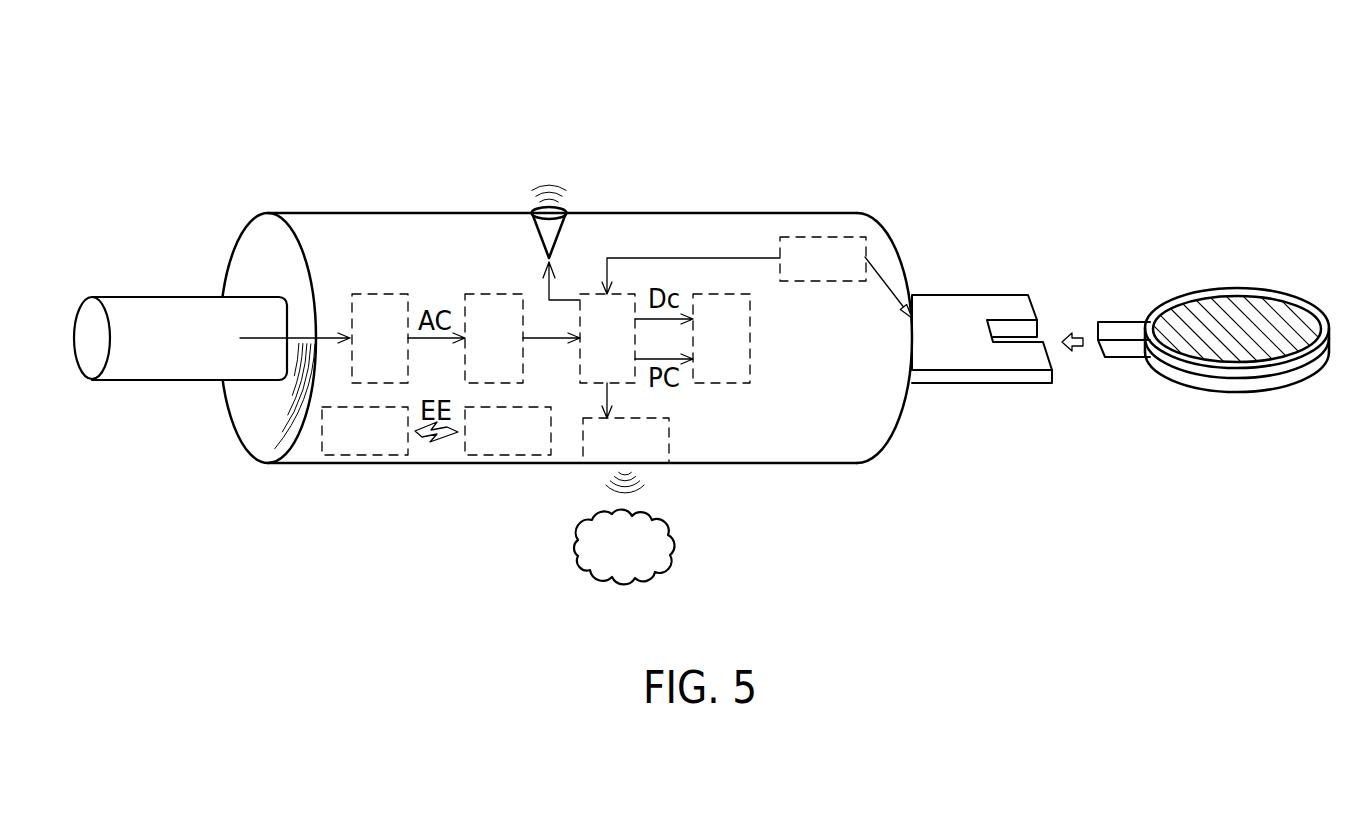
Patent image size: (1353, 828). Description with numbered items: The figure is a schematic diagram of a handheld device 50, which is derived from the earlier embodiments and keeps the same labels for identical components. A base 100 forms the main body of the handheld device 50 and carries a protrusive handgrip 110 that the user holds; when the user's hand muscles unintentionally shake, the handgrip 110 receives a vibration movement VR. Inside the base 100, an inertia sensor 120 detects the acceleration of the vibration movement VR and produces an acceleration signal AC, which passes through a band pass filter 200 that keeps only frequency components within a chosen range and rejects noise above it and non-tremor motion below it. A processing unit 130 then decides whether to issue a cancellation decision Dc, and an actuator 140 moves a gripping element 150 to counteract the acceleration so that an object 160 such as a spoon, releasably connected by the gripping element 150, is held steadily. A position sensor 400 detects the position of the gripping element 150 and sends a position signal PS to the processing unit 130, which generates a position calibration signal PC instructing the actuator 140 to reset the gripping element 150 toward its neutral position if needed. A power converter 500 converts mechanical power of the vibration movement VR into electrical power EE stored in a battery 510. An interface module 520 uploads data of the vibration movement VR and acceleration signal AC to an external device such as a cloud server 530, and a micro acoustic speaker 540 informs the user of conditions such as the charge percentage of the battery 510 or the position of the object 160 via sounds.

The handheld device 50 is at (1083, 93).
The base 100 is at (84, 172).
The handgrip 110 is at (131, 297).
The inertia sensor 120 is at (360, 354).
The processing unit 130 is at (587, 354).
The actuator 140 is at (701, 354).
The gripping element 150 is at (965, 295).
The object 160 is at (1232, 287).
The band pass filter 200 is at (474, 354).
The position sensor 400 is at (803, 275).
The power converter 500 is at (345, 447).
The battery 510 is at (488, 447).
The interface module 520 is at (606, 456).
The cloud server 530 is at (603, 561).
The micro acoustic speaker 540 is at (565, 209).